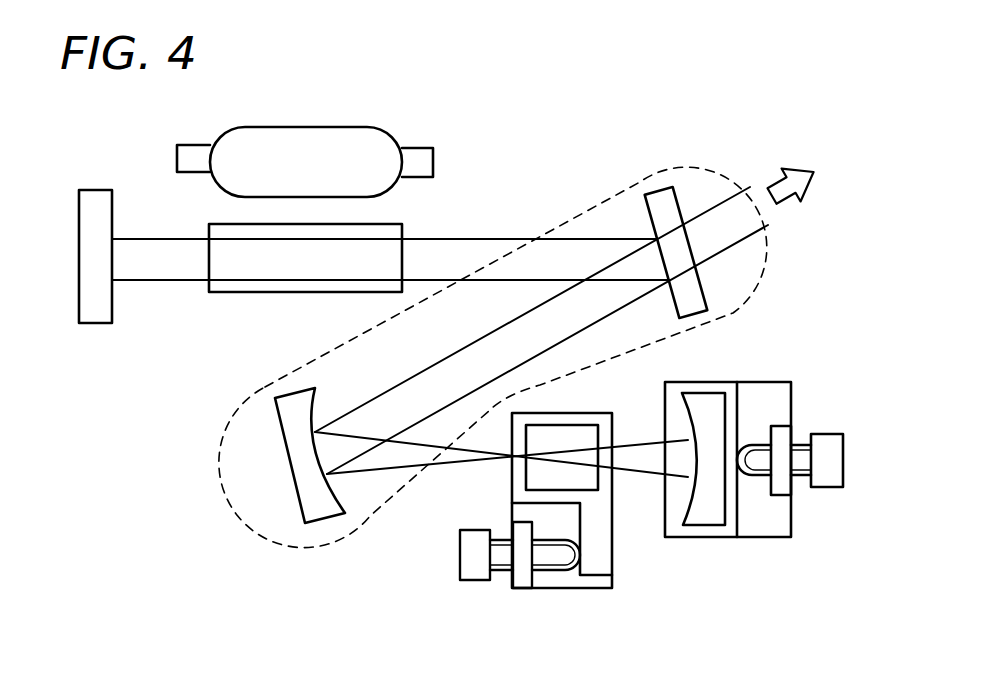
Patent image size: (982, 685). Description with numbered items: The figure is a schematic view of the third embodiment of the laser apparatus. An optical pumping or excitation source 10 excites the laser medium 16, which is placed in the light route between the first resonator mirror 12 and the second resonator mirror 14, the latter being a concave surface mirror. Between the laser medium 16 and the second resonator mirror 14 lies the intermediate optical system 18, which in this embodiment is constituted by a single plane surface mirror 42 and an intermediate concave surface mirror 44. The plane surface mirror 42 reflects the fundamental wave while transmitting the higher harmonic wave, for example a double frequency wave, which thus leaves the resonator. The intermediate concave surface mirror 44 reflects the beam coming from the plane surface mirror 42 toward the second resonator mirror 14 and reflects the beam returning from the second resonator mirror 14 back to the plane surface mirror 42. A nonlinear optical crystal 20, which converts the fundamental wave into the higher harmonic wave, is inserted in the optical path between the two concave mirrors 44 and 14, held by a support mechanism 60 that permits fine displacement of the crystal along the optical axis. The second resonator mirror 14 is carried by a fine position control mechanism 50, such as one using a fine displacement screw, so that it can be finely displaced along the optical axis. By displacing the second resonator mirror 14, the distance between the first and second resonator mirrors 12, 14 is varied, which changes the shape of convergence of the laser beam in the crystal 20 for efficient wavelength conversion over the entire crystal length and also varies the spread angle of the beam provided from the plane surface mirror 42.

The excitation source 10 is at (298, 135).
The first resonator mirror 12 is at (95, 323).
The laser medium 16 is at (243, 293).
The plane surface mirror 42 is at (657, 190).
The intermediate optical system 18 is at (753, 272).
The intermediate concave surface mirror 44 is at (287, 462).
The nonlinear optical crystal 20 is at (582, 478).
The support mechanism 60 is at (550, 590).
The fine position control mechanism 50 is at (793, 510).
The second resonator mirror 14 is at (703, 527).